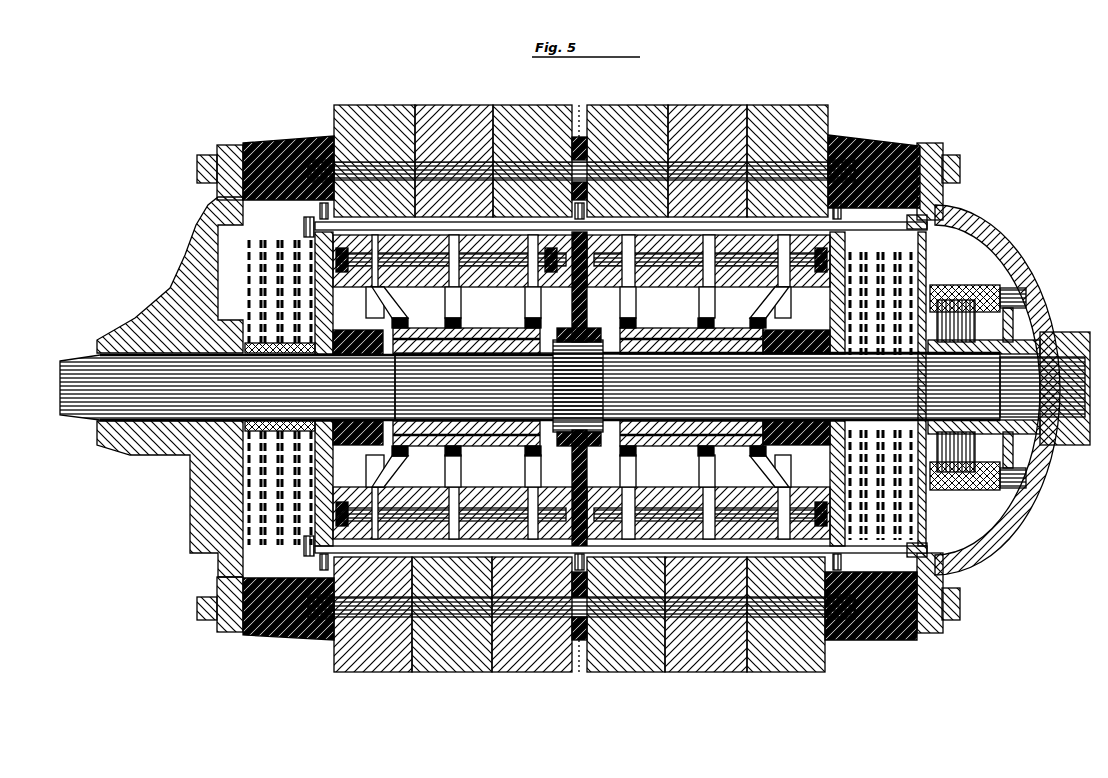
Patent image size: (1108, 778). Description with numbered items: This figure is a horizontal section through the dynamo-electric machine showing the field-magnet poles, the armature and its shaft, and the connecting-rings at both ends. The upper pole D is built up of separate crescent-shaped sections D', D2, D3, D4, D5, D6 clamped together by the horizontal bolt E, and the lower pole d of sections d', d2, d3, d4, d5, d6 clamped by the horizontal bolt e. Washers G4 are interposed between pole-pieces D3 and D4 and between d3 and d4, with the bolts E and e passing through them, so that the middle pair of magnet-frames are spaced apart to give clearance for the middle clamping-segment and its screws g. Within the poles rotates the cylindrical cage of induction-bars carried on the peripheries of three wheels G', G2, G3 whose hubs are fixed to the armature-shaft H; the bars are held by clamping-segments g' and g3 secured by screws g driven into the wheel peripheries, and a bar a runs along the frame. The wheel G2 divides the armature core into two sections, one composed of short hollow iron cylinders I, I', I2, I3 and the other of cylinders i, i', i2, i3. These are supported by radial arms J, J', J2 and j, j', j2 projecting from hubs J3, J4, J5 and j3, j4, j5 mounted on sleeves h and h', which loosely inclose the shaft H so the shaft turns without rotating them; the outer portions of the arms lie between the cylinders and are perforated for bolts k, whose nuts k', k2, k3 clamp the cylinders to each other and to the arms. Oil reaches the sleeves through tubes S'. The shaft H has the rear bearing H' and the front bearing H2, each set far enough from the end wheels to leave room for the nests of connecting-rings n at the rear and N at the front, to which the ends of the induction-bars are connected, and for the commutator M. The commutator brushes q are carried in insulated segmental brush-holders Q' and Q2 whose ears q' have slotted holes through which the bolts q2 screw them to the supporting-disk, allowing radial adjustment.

The upper pole of the field-magnets D is at (564, 150).
The upper pole section D' is at (374, 151).
The upper pole section D2 is at (454, 150).
The upper pole section D3 is at (532, 150).
The upper pole section D4 is at (627, 150).
The upper pole section D5 is at (707, 150).
The upper pole section D6 is at (787, 150).
The horizontal bolt E is at (581, 161).
The lower pole of the field-magnets d is at (588, 626).
The lower pole section d' is at (373, 626).
The lower pole section d2 is at (452, 626).
The lower pole section d3 is at (532, 626).
The lower pole section d4 is at (626, 626).
The lower pole section d5 is at (706, 626).
The lower pole section d6 is at (786, 626).
The horizontal bolt e is at (581, 607).
The washers G4 is at (579, 394).
The bearing H' is at (206, 388).
The bearing H2 is at (1009, 388).
The supporting bar a is at (621, 387).
The screws g is at (580, 387).
The clamping-segment g' is at (305, 387).
The clamping-segment g3 is at (887, 386).
The rotating wheel G' is at (349, 389).
The rotating wheel G2 is at (717, 389).
The rotating wheel G3 is at (882, 241).
The bolts k is at (581, 387).
The nut k' is at (341, 379).
The nut k2 is at (544, 253).
The rod end k3 is at (822, 387).
The sleeve h is at (466, 399).
The sleeve h' is at (691, 399).
The radial arm J is at (387, 281).
The radial arm J' is at (452, 281).
The radial arm J2 is at (532, 281).
The hub J3 is at (389, 424).
The hub J4 is at (458, 424).
The hub J5 is at (524, 425).
The radial arm j is at (770, 281).
The radial arm j' is at (706, 281).
The radial arm j2 is at (633, 281).
The hub j3 is at (764, 424).
The hub j4 is at (699, 424).
The hub j5 is at (638, 424).
The short hollow cylinder of iron I is at (397, 390).
The short hollow cylinder of iron I' is at (414, 389).
The short hollow cylinder of iron I2 is at (486, 388).
The short hollow cylinder of iron I3 is at (555, 388).
The tube S' is at (462, 383).
The short hollow cylinder of iron i is at (803, 390).
The short hollow cylinder of iron i' is at (745, 390).
The short hollow cylinder of iron i2 is at (674, 388).
The short hollow cylinder of iron i3 is at (608, 388).
The nests of connecting-rings n is at (276, 390).
The nests of concentric connecting-rings N is at (888, 389).
The armature-shaft H is at (572, 386).
The segmental brush-holder Q' is at (965, 287).
The segmental brush-holder Q2 is at (965, 484).
The brush q is at (964, 386).
The ears q' is at (1015, 398).
The bolts q2 is at (1004, 284).
The commutator M is at (947, 482).